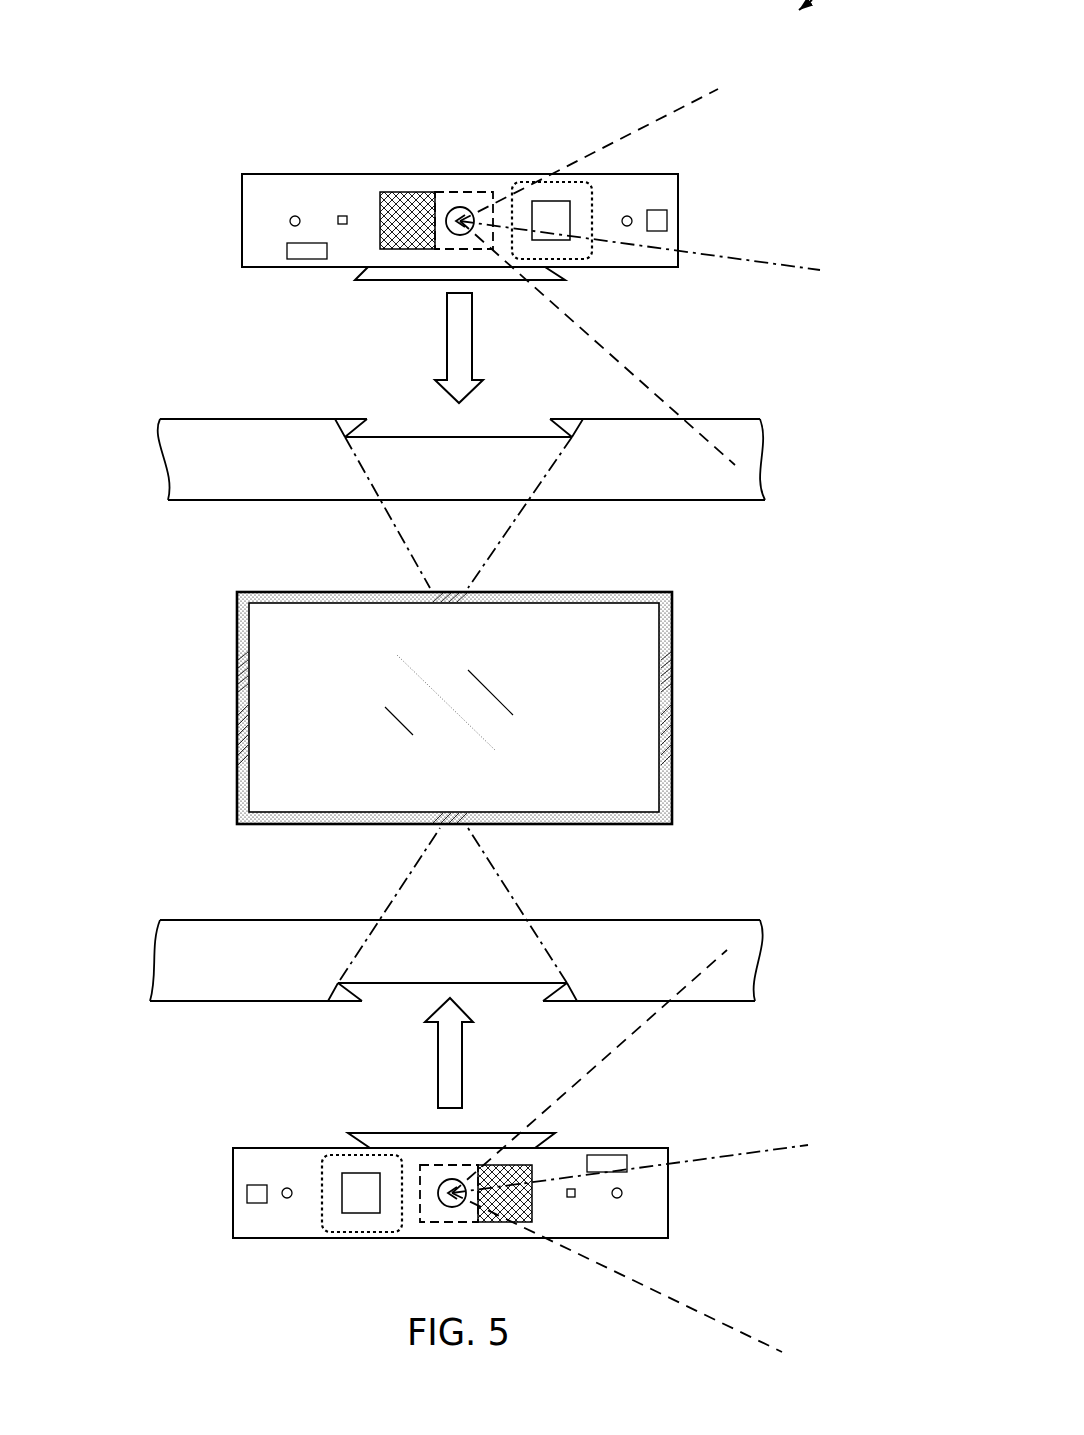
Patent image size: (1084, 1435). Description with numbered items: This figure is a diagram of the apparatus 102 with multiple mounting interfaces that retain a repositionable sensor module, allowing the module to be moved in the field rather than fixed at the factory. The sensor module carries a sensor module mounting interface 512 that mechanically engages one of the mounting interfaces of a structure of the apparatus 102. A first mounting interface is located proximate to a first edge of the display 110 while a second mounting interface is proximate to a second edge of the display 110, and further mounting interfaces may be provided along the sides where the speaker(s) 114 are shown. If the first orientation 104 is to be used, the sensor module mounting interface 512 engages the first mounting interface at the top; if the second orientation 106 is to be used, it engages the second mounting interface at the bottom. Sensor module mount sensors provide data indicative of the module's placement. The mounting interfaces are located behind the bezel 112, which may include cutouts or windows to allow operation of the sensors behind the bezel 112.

The first orientation 104 is at (308, 85).
The apparatus 102 is at (670, 258).
The sensor module mounting interface 512 is at (378, 282).
The speaker(s) 114 is at (243, 670).
The display 110 is at (283, 757).
The bezel 112 is at (625, 818).
The second orientation 106 is at (308, 1257).